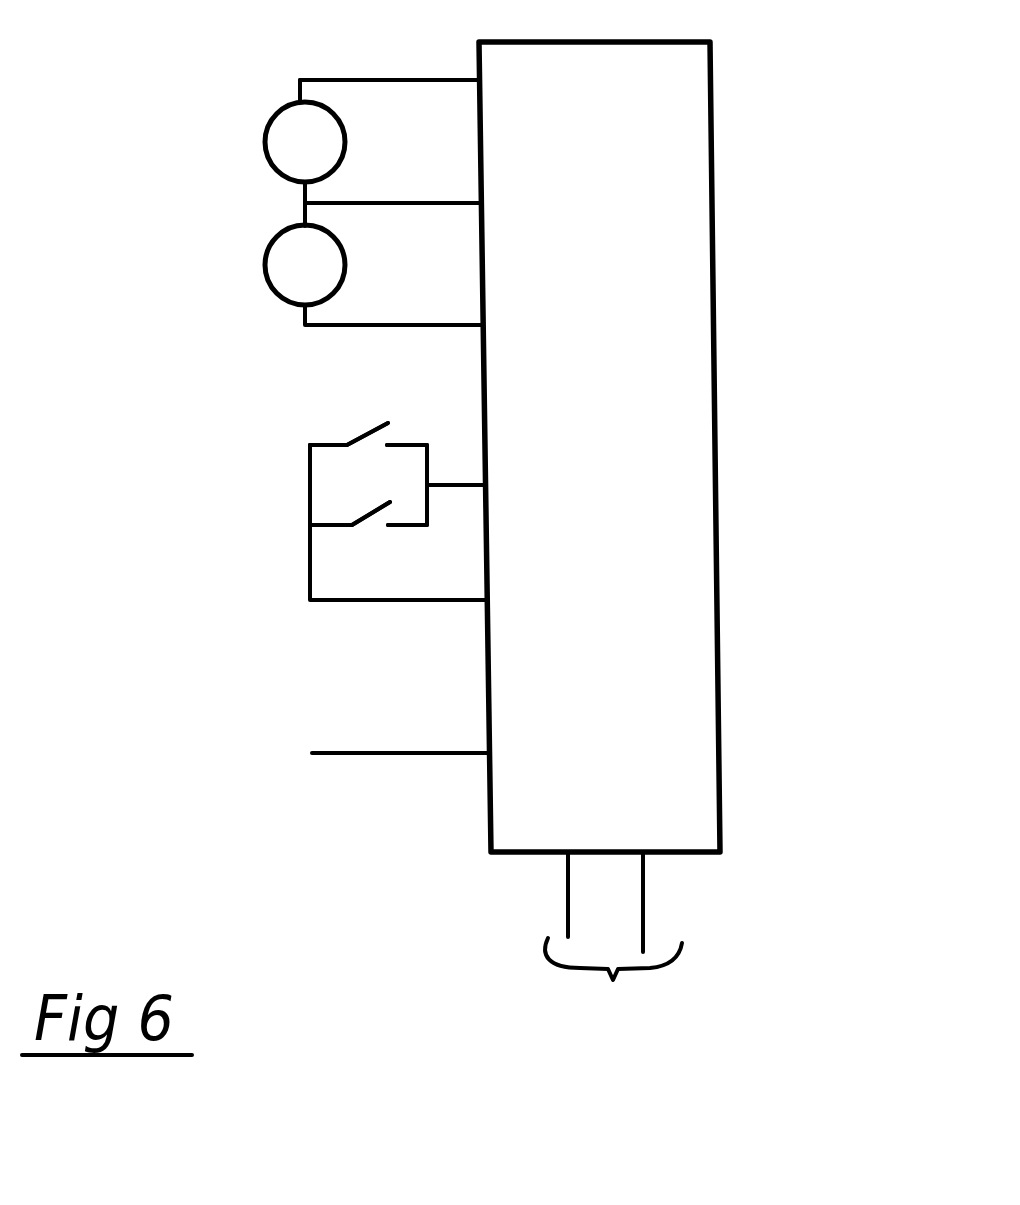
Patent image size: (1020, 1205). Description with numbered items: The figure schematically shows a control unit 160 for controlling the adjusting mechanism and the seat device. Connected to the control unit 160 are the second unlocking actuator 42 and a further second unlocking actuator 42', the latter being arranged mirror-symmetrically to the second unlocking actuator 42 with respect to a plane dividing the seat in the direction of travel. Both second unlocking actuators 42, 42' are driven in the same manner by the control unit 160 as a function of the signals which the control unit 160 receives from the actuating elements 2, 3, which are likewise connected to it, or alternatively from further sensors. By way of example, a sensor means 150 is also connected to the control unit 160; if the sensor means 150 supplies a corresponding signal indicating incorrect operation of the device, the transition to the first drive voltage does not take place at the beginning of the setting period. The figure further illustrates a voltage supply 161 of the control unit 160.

The control unit 160 is at (678, 373).
The voltage supply 161 is at (613, 957).
The second unlocking actuator 42 is at (318, 129).
The further second unlocking actuator 42' is at (326, 252).
The actuating element 2 is at (277, 423).
The actuating element 3 is at (284, 474).
The sensor means 150 is at (347, 750).